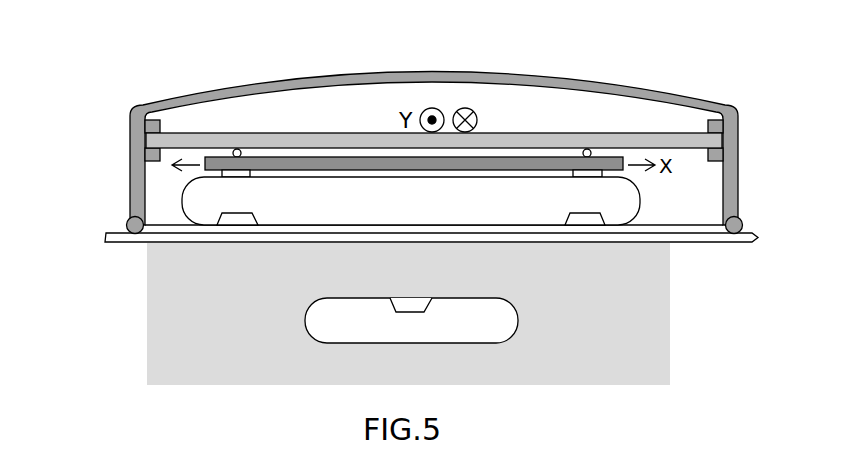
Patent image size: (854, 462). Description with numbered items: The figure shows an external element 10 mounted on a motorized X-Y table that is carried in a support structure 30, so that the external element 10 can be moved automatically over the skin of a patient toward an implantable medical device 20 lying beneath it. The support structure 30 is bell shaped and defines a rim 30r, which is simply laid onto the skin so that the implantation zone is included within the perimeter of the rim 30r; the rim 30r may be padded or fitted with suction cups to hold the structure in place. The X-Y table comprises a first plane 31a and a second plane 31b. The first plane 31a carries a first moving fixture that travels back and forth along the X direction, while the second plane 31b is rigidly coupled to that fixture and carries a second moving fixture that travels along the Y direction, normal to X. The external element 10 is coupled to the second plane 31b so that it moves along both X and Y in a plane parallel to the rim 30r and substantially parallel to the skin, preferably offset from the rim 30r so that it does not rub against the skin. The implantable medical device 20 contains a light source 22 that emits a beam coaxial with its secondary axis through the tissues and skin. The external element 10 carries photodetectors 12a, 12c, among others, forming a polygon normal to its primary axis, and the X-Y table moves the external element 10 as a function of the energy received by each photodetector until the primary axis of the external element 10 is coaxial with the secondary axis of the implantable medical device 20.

The support structure 30 is at (131, 130).
The rim 30r is at (125, 232).
The first plane 31a is at (553, 157).
The second plane 31b is at (267, 133).
The external element 10 is at (205, 202).
The photodetector 12a is at (237, 225).
The photodetector 12c is at (585, 228).
The implantable medical device 20 is at (306, 318).
The light source 22 is at (417, 312).